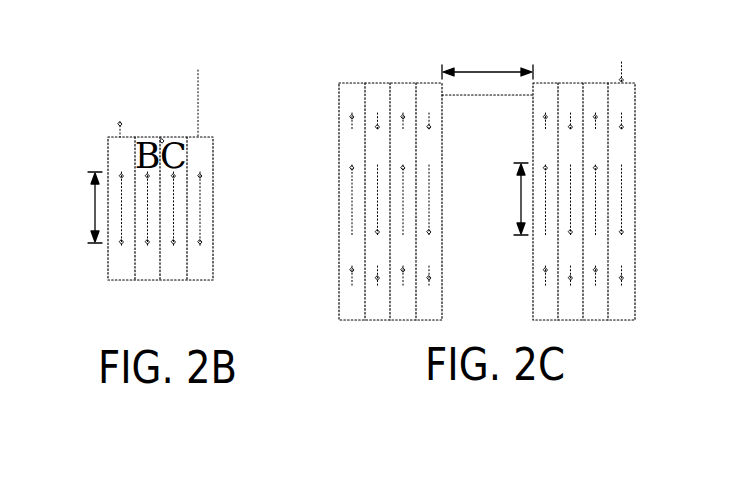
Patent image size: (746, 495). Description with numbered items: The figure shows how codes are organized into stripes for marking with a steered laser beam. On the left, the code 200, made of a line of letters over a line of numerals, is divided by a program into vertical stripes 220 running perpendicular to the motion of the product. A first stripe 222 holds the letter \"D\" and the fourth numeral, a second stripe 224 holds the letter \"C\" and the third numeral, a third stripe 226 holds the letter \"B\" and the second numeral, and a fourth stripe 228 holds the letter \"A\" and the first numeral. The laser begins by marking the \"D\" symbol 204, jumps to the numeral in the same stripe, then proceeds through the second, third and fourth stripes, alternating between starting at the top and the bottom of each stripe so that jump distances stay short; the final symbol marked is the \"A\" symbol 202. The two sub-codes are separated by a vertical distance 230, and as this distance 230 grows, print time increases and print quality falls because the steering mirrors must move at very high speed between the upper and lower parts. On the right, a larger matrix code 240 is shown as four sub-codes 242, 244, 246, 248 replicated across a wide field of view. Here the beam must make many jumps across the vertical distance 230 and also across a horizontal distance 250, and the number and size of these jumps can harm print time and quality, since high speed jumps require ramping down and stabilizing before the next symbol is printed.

In FIG. 2B, the code 200 is at (0, 83).
In FIG. 2B, the symbol "A" 202 is at (117, 142).
In FIG. 2B, the symbol "D" 204 is at (213, 164).
In FIG. 2B, the stripes 220 is at (154, 101).
In FIG. 2B, the first stripe 222 is at (200, 282).
In FIG. 2B, the second stripe 224 is at (173, 282).
In FIG. 2B, the third stripe 226 is at (147, 282).
In FIG. 2B, the fourth stripe 228 is at (118, 282).
In FIG. 2B, the vertical distance 230 is at (93, 212).
In FIG. 2C, the vertical distance 230 is at (521, 203).
In FIG. 2C, the matrix code 240 is at (338, 64).
In FIG. 2C, the sub-code 242 is at (331, 128).
In FIG. 2C, the sub-code 244 is at (331, 278).
In FIG. 2C, the sub-code 246 is at (640, 121).
In FIG. 2C, the sub-code 248 is at (640, 281).
In FIG. 2C, the horizontal distance 250 is at (490, 71).